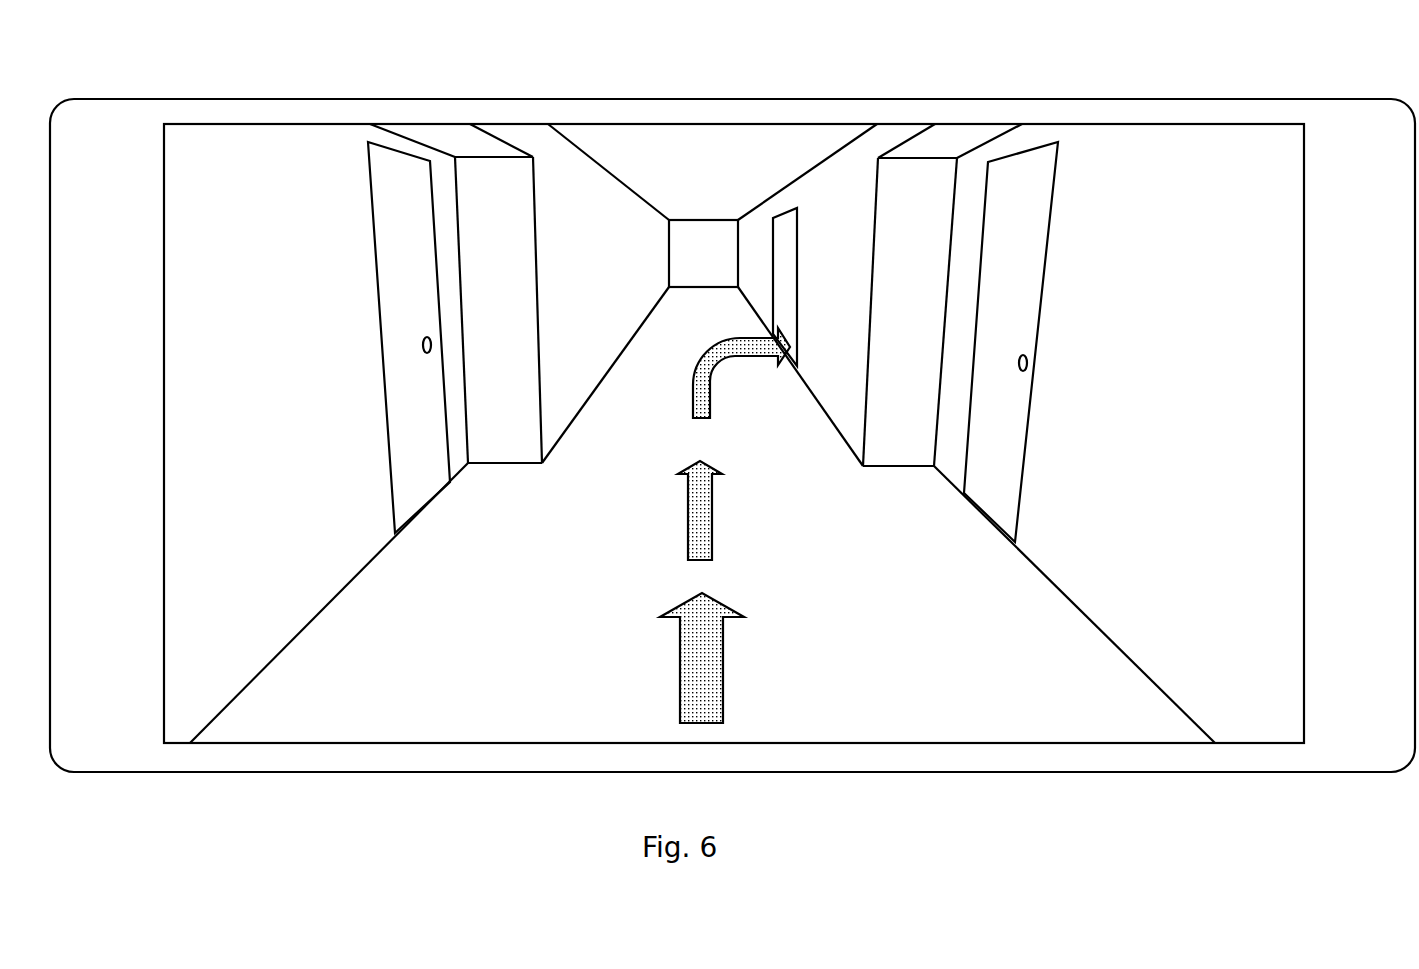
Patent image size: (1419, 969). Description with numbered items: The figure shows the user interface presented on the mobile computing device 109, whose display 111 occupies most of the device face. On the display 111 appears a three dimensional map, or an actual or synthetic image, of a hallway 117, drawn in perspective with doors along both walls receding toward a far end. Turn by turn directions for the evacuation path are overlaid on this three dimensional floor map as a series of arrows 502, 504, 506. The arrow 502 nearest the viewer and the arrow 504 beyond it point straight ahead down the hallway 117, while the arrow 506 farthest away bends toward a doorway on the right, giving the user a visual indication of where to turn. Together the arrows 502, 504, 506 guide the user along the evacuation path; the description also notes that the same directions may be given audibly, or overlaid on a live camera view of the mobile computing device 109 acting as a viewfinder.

The mobile computing device 109 is at (226, 93).
The display 111 is at (164, 275).
The hallway 117 is at (1206, 148).
The arrow 502 is at (678, 606).
The arrow 504 is at (682, 473).
The arrow 506 is at (738, 338).